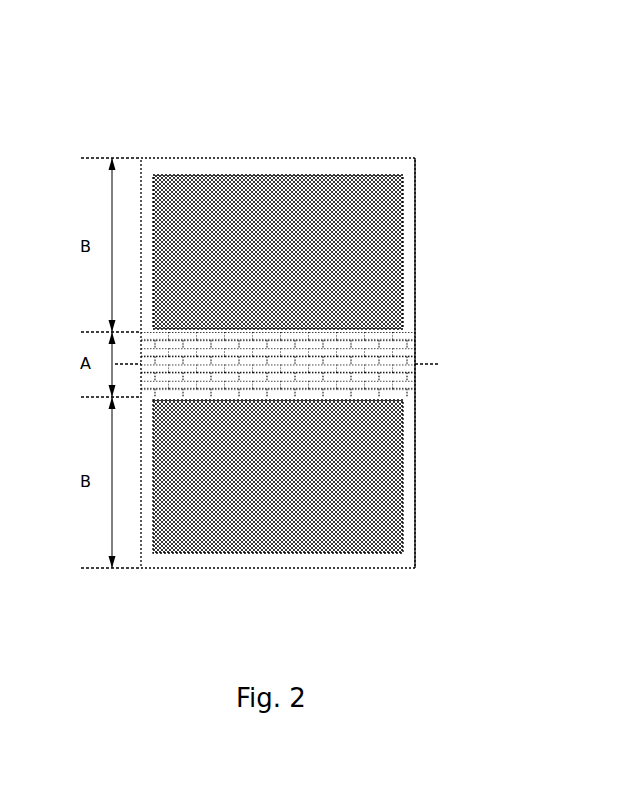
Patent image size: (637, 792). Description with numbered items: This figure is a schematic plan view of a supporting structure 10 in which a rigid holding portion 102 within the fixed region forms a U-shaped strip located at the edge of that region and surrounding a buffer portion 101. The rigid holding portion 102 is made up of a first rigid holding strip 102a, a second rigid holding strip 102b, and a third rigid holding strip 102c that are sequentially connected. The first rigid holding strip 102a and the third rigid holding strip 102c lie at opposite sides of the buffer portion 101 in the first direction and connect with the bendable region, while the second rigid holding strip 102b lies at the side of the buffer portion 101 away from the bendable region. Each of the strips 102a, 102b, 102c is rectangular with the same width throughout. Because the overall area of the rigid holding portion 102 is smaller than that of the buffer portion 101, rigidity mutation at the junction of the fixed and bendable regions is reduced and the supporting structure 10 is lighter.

The supporting structure 10 is at (93, 56).
The buffer portion 101 is at (388, 305).
The rigid holding portion 102 is at (284, 365).
The first rigid holding strip 102a is at (148, 190).
The second rigid holding strip 102b is at (284, 168).
The third rigid holding strip 102c is at (410, 363).